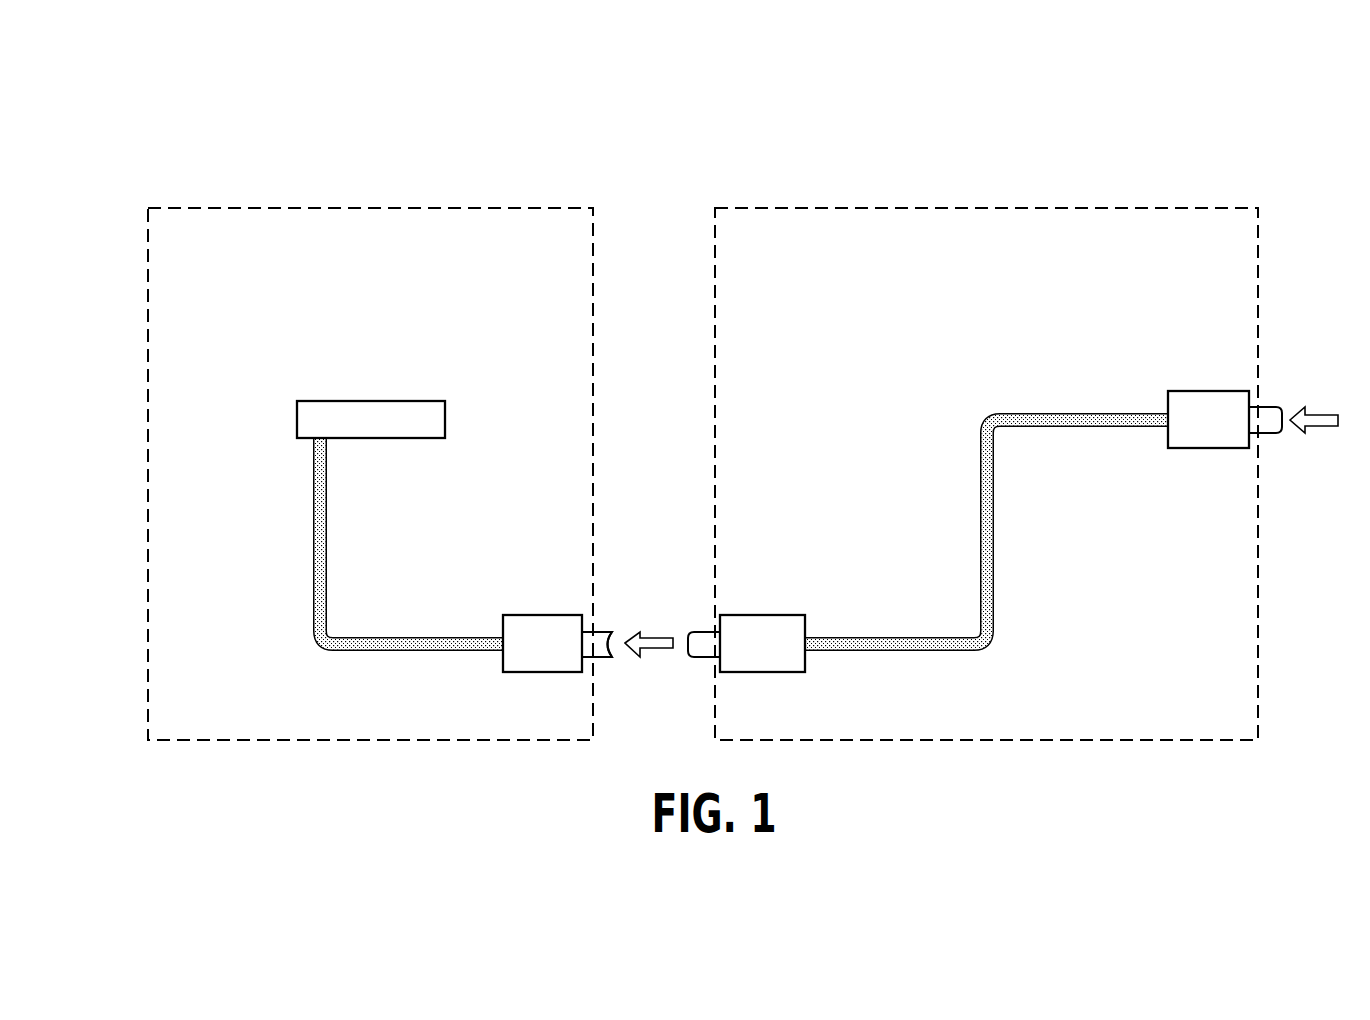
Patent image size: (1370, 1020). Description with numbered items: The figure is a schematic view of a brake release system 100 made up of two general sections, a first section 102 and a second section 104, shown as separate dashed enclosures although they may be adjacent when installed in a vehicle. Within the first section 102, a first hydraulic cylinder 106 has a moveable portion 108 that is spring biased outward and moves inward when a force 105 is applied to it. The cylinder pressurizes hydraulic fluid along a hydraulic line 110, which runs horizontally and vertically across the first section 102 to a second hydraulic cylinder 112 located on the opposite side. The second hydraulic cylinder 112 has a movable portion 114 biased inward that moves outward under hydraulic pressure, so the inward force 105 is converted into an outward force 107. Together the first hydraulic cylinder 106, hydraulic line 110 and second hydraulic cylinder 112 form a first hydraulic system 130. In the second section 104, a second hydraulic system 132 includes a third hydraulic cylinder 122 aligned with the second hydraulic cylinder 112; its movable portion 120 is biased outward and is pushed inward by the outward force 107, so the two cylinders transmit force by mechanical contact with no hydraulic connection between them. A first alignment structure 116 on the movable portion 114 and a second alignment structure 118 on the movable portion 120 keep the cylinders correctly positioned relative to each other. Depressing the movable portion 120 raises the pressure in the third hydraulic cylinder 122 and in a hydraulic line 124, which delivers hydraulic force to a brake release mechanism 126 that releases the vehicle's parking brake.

The brake release system 100 is at (858, 120).
The first section 102 is at (1022, 208).
The second section 104 is at (340, 208).
The force 105 is at (1318, 407).
The first hydraulic cylinder 106 is at (1208, 391).
The outward force 107 is at (656, 630).
The moveable portion 108 is at (1265, 433).
The hydraulic line 110 is at (1066, 413).
The second hydraulic cylinder 112 is at (762, 615).
The movable portion 114 is at (702, 658).
The coupling face 116 is at (690, 656).
The second alignment structure 118 is at (611, 638).
The movable portion 120 is at (604, 632).
The third hydraulic cylinder 122 is at (533, 615).
The hydraulic line 124 is at (405, 637).
The brake release mechanism 126 is at (368, 400).
The first hydraulic system 130 is at (1055, 573).
The second hydraulic system 132 is at (282, 627).